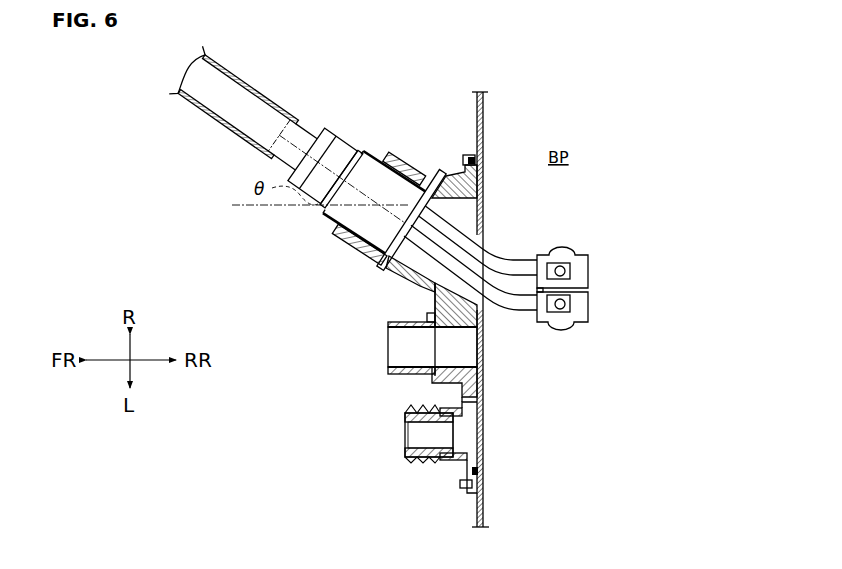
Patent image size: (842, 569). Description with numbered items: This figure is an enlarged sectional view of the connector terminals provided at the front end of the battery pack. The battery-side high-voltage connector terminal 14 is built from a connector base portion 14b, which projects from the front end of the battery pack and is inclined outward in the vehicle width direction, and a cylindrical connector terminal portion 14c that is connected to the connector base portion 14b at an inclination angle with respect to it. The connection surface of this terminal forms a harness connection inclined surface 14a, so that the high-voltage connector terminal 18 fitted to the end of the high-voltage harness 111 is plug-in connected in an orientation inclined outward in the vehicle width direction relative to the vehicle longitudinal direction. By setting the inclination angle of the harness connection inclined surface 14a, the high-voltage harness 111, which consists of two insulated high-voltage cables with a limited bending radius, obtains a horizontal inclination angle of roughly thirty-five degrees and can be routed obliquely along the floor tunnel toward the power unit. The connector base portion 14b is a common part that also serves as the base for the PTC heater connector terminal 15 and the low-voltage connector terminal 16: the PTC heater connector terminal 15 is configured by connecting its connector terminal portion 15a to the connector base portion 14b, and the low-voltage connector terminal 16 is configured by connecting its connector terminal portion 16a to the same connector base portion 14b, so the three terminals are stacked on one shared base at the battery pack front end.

The high-voltage harness 111 is at (233, 138).
The high-voltage connector terminal 18 is at (322, 216).
The battery-side high-voltage connector terminal 14 is at (358, 256).
The harness connection inclined surface 14a is at (386, 200).
The connector base portion 14b is at (488, 318).
The cylindrical connector terminal portion 14c is at (436, 172).
The PTC heater connector terminal 15 is at (396, 375).
The connector terminal portion 15a is at (399, 322).
The low-voltage connector terminal 16 is at (404, 460).
The connector terminal portion 16a is at (408, 410).